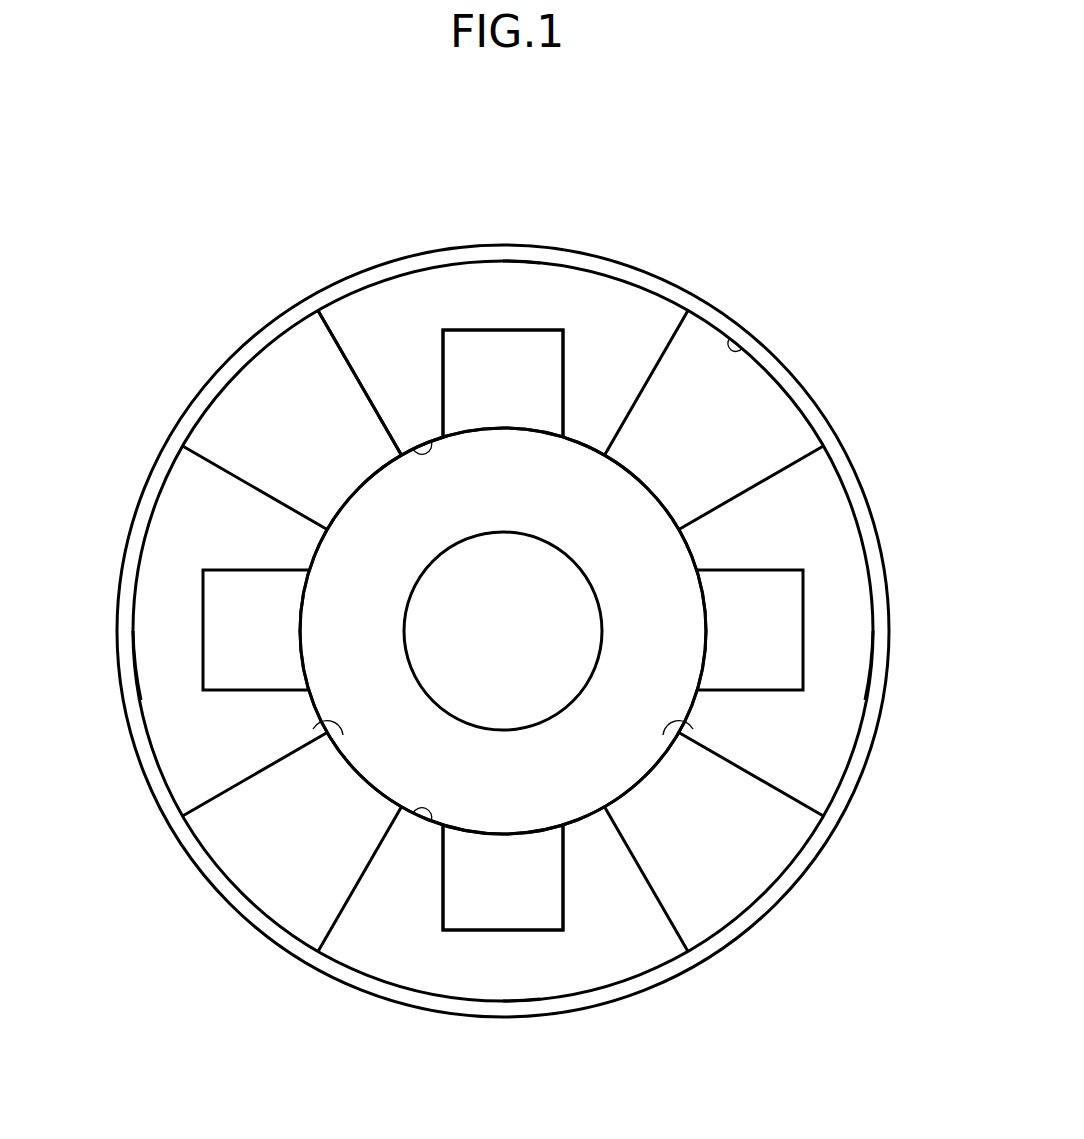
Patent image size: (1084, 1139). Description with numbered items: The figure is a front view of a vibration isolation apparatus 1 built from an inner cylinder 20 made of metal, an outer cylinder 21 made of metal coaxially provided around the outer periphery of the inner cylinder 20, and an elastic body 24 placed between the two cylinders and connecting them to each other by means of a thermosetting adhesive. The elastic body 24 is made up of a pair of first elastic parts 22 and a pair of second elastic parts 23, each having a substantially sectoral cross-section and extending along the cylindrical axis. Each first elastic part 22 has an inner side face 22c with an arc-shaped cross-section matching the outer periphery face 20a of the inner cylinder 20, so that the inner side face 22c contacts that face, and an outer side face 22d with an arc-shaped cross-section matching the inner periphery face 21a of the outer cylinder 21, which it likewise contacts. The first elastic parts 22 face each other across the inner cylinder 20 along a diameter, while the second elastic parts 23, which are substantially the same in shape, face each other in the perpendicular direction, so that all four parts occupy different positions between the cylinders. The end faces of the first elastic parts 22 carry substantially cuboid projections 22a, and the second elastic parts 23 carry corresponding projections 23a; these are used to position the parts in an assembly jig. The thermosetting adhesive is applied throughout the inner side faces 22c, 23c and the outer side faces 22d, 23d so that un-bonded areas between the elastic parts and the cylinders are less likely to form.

The vibration isolation apparatus 1 is at (827, 163).
The inner cylinder 20 is at (380, 532).
The outer periphery face 20a is at (373, 468).
The outer cylinder 21 is at (667, 290).
The inner periphery face 21a is at (733, 358).
The first elastic part 22 is at (565, 290).
The projection 22a is at (483, 358).
The inner side face 22c is at (431, 441).
The outer side face 22d is at (423, 268).
The second elastic part 23 is at (200, 498).
The projection 23a is at (223, 617).
The inner side face 23c is at (325, 733).
The outer side face 23d is at (148, 747).
The elastic body 24 is at (360, 318).